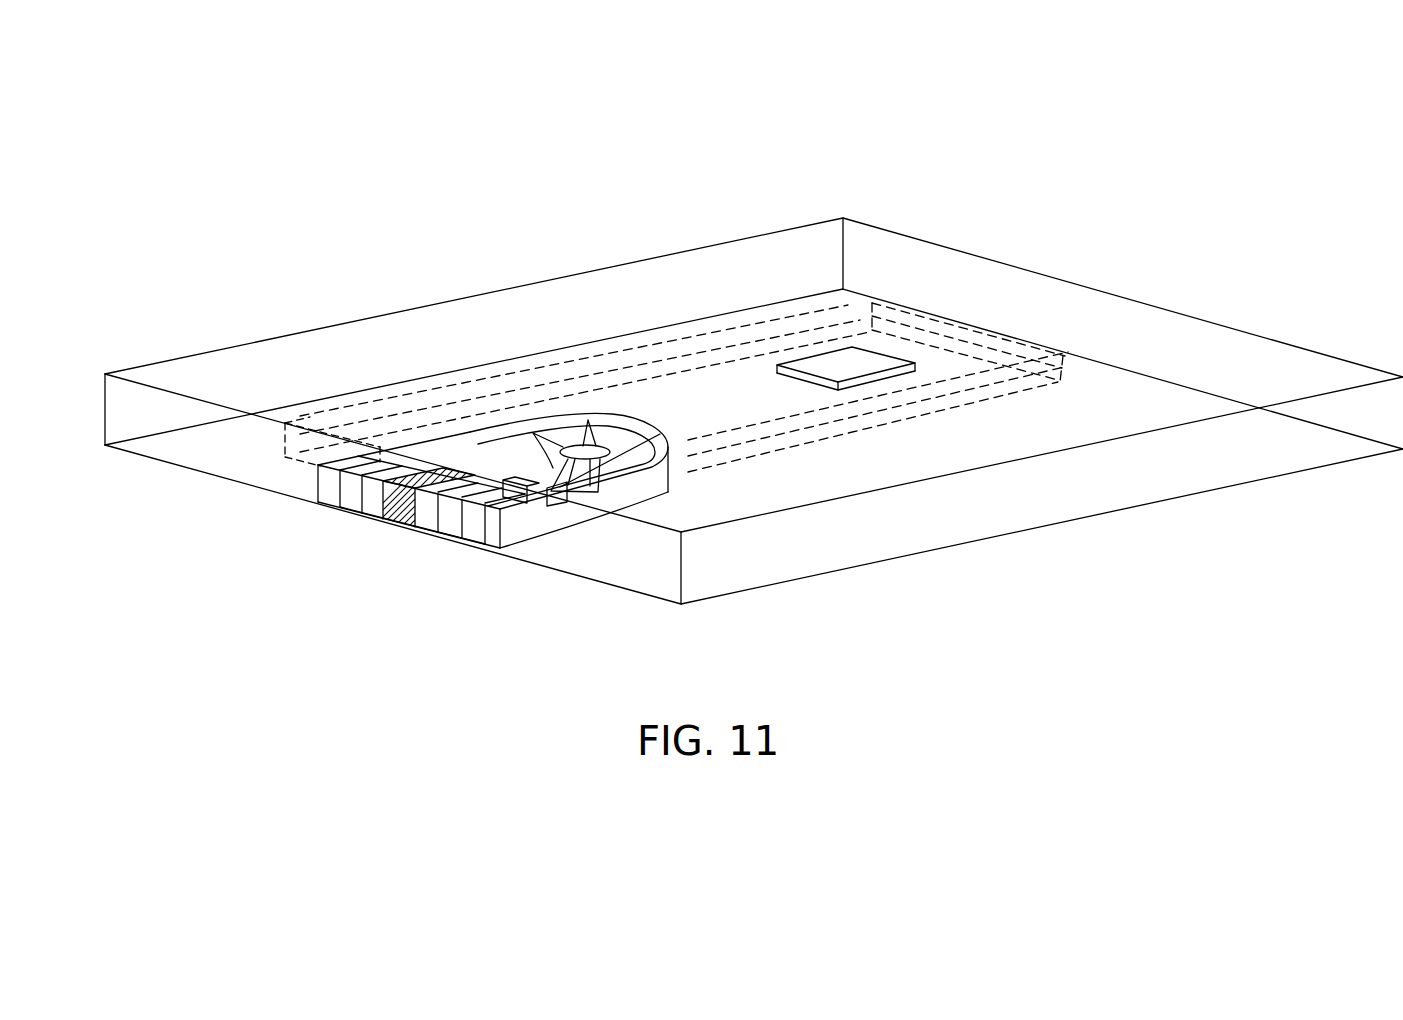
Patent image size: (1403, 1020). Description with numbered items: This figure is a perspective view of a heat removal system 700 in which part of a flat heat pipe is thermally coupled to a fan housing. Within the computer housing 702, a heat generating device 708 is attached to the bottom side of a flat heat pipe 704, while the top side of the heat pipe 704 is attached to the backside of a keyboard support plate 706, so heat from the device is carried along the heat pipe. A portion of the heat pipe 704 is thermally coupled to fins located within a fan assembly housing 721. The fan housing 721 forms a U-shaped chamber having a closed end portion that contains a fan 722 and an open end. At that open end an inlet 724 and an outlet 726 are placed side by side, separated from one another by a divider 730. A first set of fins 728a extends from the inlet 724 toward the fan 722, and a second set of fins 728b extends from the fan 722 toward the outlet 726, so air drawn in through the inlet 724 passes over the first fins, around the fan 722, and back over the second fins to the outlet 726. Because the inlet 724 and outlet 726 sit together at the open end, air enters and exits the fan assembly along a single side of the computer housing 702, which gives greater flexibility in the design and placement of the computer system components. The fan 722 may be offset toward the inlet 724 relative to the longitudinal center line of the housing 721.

The microfluidic device 700 is at (224, 57).
The computer housing 702 is at (752, 568).
The flat heat pipe 704 is at (867, 423).
The keyboard support plate 706 is at (752, 430).
The heat generating device 708 is at (823, 362).
The fan assembly housing 721 is at (508, 428).
The fan 722 is at (596, 437).
The inlet 724 is at (453, 550).
The outlet 726 is at (323, 515).
The first set of fins 728a is at (488, 467).
The second set of fins 728b is at (380, 447).
The divider 730 is at (397, 523).